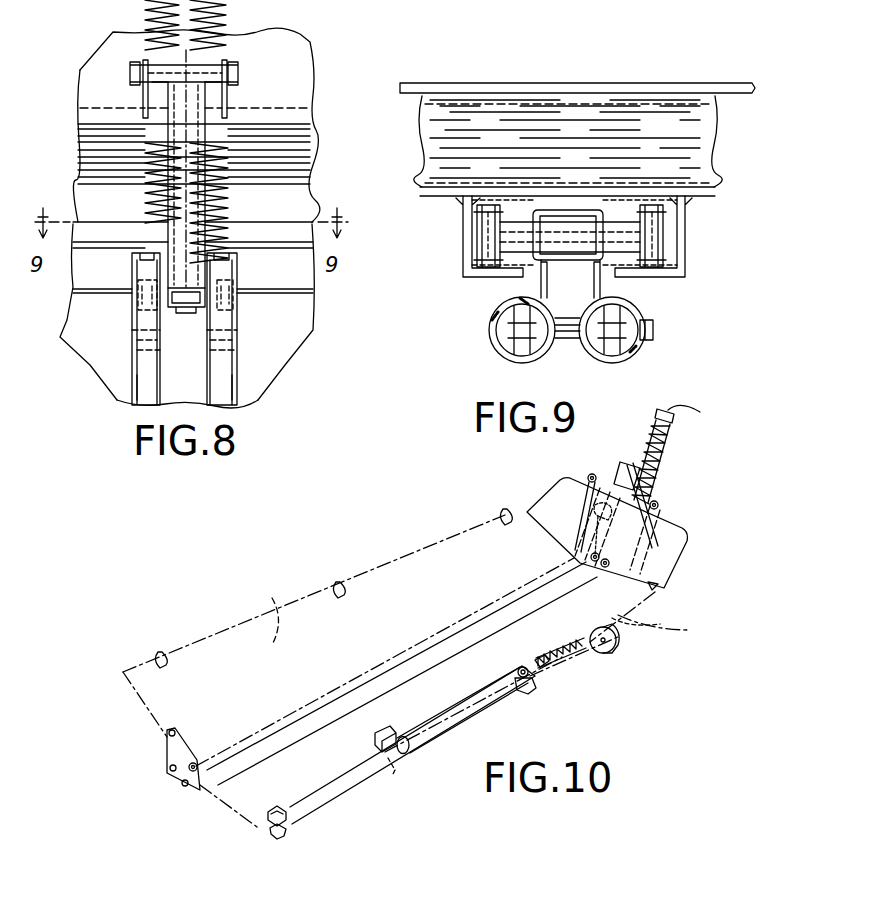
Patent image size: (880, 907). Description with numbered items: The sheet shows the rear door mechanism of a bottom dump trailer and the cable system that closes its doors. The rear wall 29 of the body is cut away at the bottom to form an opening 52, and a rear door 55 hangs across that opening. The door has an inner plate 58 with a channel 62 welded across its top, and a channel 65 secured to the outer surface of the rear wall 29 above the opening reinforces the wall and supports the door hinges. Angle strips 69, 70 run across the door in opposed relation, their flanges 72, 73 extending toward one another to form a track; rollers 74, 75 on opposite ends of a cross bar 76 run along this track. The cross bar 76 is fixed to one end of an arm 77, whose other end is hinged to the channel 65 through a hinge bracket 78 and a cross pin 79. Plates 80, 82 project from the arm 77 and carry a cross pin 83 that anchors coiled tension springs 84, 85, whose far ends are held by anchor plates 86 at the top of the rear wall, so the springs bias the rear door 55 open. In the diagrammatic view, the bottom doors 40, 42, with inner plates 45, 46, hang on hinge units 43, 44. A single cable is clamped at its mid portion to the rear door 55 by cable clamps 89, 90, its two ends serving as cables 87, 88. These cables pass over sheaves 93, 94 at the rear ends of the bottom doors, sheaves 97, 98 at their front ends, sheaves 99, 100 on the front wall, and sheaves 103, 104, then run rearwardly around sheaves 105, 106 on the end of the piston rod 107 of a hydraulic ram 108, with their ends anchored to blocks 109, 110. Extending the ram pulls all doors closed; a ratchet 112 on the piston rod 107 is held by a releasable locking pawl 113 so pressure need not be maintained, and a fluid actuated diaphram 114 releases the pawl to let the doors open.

In FIG. 8, the rear wall 29 is at (310, 46).
In FIG. 8, the hinge bracket 78 is at (143, 64).
In FIG. 8, the cross pin 79 is at (130, 75).
In FIG. 10, the cross pin 79 is at (599, 503).
In FIG. 8, the arm 77 is at (205, 112).
In FIG. 9, the arm 77 is at (580, 222).
In FIG. 10, the arm 77 is at (640, 495).
In FIG. 8, the channel 65 is at (296, 114).
In FIG. 8, the coiled tension spring 84 is at (95, 169).
In FIG. 9, the coiled tension spring 84 is at (492, 345).
In FIG. 10, the coiled tension spring 84 is at (665, 452).
In FIG. 8, the coiled tension spring 85 is at (228, 160).
In FIG. 9, the coiled tension spring 85 is at (630, 350).
In FIG. 10, the coiled tension spring 85 is at (635, 456).
In FIG. 8, the opening 52 is at (295, 206).
In FIG. 8, the channel 62 is at (300, 219).
In FIG. 9, the channel 62 is at (450, 118).
In FIG. 8, the plate 80 is at (140, 283).
In FIG. 9, the plate 80 is at (543, 285).
In FIG. 8, the plate 82 is at (232, 283).
In FIG. 9, the plate 82 is at (600, 285).
In FIG. 8, the rear door 55 is at (308, 335).
In FIG. 9, the rear door 55 is at (525, 90).
In FIG. 10, the rear door 55 is at (665, 522).
In FIG. 8, the roller 74 is at (138, 309).
In FIG. 9, the roller 74 is at (488, 218).
In FIG. 8, the roller 75 is at (233, 312).
In FIG. 9, the roller 75 is at (650, 218).
In FIG. 8, the cross bar 76 is at (188, 310).
In FIG. 9, the cross bar 76 is at (565, 237).
In FIG. 8, the angle strip 70 is at (237, 351).
In FIG. 9, the angle strip 70 is at (685, 237).
In FIG. 8, the angle strip 69 is at (132, 359).
In FIG. 9, the angle strip 69 is at (463, 246).
In FIG. 8, the flange 72 is at (146, 379).
In FIG. 9, the flange 72 is at (505, 277).
In FIG. 8, the flange 73 is at (225, 385).
In FIG. 9, the flange 73 is at (640, 274).
In FIG. 9, the inner plate 58 is at (570, 92).
In FIG. 9, the cross pin 83 is at (653, 332).
In FIG. 10, the anchor plate 86 is at (692, 417).
In FIG. 10, the bottom door 42 is at (418, 550).
In FIG. 10, the bottom door 40 is at (458, 709).
In FIG. 10, the inner plate 45 is at (636, 631).
In FIG. 10, the hinge unit 44 is at (160, 655).
In FIG. 10, the inner plate 46 is at (263, 614).
In FIG. 10, the cable clamp 89 is at (607, 533).
In FIG. 10, the cable clamp 90 is at (592, 511).
In FIG. 10, the sheave 94 is at (588, 558).
In FIG. 10, the sheave 93 is at (606, 568).
In FIG. 10, the hinge unit 43 is at (656, 590).
In FIG. 10, the cable 88 is at (383, 660).
In FIG. 10, the cable 87 is at (400, 674).
In FIG. 10, the hydraulic ram 108 is at (330, 810).
In FIG. 10, the piston rod 107 is at (485, 712).
In FIG. 10, the block 110 is at (381, 732).
In FIG. 10, the block 109 is at (392, 778).
In FIG. 10, the sheave 104 is at (280, 808).
In FIG. 10, the sheave 103 is at (278, 840).
In FIG. 10, the sheave 99 is at (196, 760).
In FIG. 10, the sheave 100 is at (174, 728).
In FIG. 10, the sheave 98 is at (168, 770).
In FIG. 10, the sheave 97 is at (183, 788).
In FIG. 10, the sheave 106 is at (523, 667).
In FIG. 10, the sheave 105 is at (535, 690).
In FIG. 10, the releasable locking pawl 113 is at (545, 660).
In FIG. 10, the ratchet 112 is at (575, 661).
In FIG. 10, the fluid actuated diaphram 114 is at (620, 645).